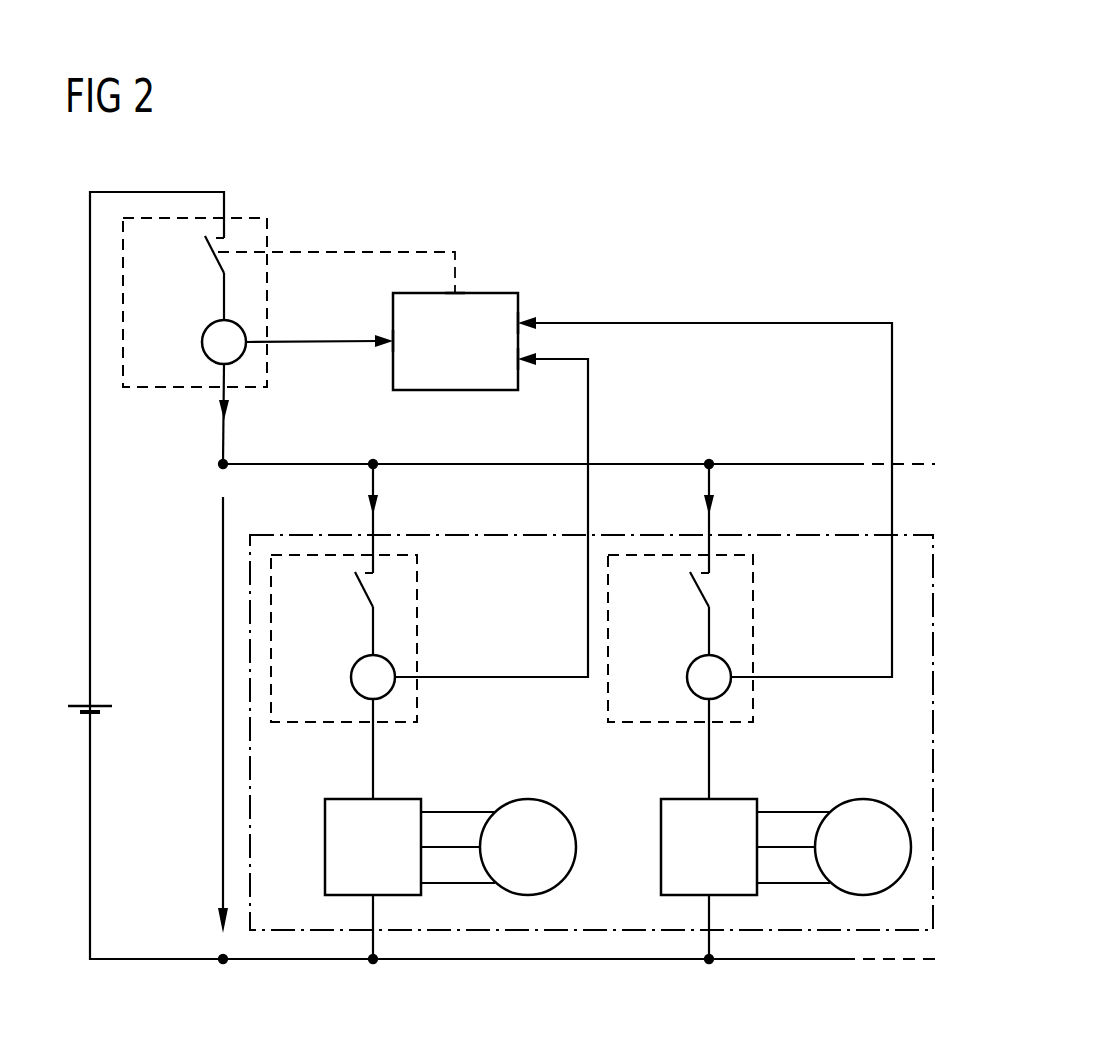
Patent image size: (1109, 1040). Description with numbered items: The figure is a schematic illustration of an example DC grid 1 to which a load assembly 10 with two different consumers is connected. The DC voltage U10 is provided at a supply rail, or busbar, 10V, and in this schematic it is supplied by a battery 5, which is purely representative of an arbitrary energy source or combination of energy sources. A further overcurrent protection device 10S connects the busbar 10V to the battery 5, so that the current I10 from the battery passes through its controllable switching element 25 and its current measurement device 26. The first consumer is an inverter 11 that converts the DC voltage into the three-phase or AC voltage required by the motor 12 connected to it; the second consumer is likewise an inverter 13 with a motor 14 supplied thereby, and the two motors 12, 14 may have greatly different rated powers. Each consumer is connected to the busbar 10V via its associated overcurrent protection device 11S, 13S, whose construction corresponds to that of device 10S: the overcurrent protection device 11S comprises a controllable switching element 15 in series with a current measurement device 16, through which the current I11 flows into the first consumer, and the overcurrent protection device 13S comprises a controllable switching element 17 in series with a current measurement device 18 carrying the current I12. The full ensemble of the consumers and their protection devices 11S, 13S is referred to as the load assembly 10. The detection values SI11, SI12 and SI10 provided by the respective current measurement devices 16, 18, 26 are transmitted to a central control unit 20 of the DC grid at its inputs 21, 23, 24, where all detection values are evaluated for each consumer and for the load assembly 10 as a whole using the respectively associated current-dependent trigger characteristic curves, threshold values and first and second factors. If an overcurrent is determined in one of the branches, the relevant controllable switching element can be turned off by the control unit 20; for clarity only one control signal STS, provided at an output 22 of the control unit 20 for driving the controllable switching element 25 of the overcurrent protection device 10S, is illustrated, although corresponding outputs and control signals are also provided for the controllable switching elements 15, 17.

The DC grid 1 is at (660, 246).
The battery 5 is at (75, 703).
The load assembly 10 is at (830, 533).
The overcurrent protection device 10S is at (243, 215).
The supply rail 10V is at (650, 462).
The inverter 11 is at (396, 797).
The motor 12 is at (528, 798).
The inverter 13 is at (733, 797).
The motor 14 is at (863, 798).
The overcurrent protection device 11S is at (418, 625).
The overcurrent protection device 13S is at (755, 625).
The controllable switching element 15 is at (358, 588).
The current measurement device 16 is at (351, 677).
The controllable switching element 17 is at (693, 588).
The current measurement device 18 is at (687, 677).
The control unit 20 is at (393, 370).
The input 21 is at (393, 338).
The output 22 is at (455, 291).
The input 23 is at (520, 363).
The input 24 is at (520, 320).
The controllable switching element 25 is at (208, 252).
The current measurement device 26 is at (202, 342).
The control signal STS is at (336, 256).
The detection value SI10 is at (319, 327).
The detection value SI11 is at (491, 515).
The detection value SI12 is at (705, 482).
The current I10 is at (204, 414).
The current I11 is at (354, 518).
The current I12 is at (688, 518).
The DC voltage U10 is at (197, 715).